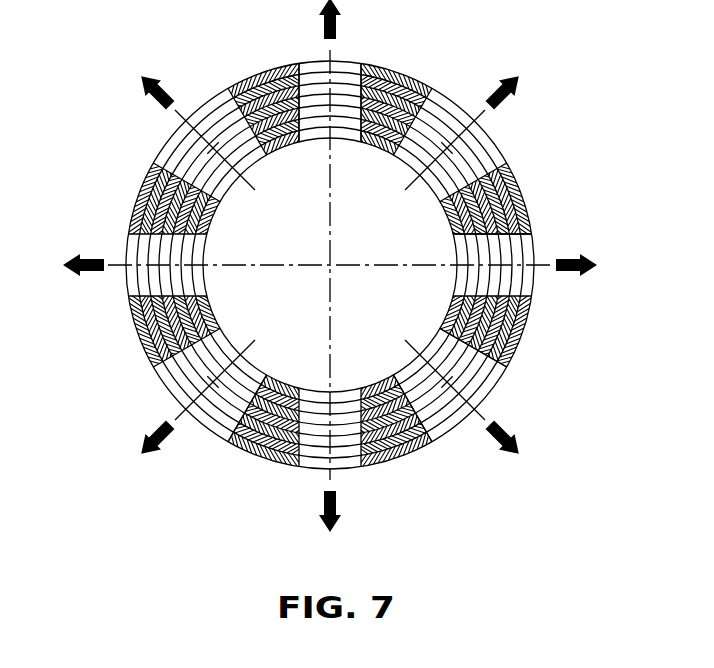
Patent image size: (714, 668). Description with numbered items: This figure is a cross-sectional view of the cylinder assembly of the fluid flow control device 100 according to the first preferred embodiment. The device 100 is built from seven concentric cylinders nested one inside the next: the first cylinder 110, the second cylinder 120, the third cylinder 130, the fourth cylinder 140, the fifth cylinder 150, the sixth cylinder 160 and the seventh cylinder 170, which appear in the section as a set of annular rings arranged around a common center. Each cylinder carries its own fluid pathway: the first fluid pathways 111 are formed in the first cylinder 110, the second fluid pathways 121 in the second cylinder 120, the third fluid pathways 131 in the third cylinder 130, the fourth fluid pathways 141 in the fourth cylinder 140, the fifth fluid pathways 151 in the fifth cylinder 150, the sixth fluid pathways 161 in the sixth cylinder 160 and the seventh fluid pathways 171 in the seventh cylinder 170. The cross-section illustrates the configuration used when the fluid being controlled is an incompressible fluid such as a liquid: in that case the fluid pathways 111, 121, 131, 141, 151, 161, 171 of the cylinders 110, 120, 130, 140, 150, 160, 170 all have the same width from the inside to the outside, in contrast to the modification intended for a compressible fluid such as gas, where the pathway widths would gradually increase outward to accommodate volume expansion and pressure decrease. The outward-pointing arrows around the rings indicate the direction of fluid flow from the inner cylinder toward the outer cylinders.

The fluid flow control device 100 is at (525, 347).
The first cylinder 110 is at (470, 203).
The first fluid pathways 111 is at (462, 253).
The second cylinder 120 is at (427, 97).
The second fluid pathways 121 is at (475, 287).
The third cylinder 130 is at (230, 83).
The third fluid pathways 131 is at (427, 387).
The fourth cylinder 140 is at (377, 97).
The fourth fluid pathways 141 is at (462, 365).
The fifth cylinder 150 is at (290, 95).
The fifth fluid pathways 151 is at (347, 440).
The sixth cylinder 160 is at (148, 163).
The sixth fluid pathways 161 is at (313, 450).
The seventh cylinder 170 is at (140, 330).
The seventh fluid pathways 171 is at (203, 418).